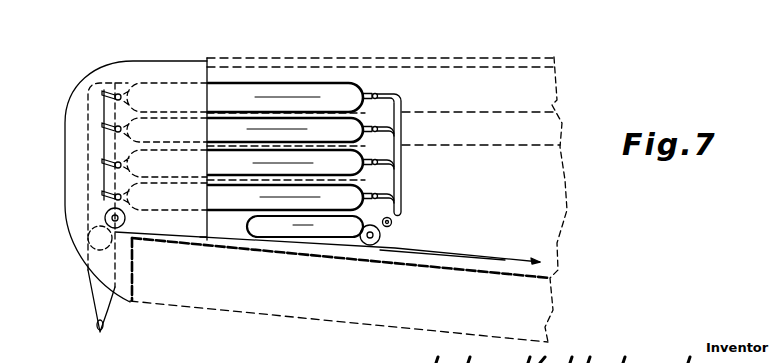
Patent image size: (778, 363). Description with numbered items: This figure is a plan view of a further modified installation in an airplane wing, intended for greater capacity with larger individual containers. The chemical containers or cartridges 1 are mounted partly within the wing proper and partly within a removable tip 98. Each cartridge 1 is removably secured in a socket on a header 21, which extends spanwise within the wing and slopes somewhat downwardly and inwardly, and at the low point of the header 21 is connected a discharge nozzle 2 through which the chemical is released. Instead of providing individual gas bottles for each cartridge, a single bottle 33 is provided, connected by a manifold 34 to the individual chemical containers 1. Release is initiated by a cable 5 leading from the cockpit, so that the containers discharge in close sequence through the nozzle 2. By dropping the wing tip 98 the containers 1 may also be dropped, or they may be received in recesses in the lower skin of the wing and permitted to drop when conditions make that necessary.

The cartridge 1 is at (255, 90).
The discharge nozzle 2 is at (100, 305).
The cable 5 is at (533, 257).
The header 21 is at (88, 170).
The bottle 33 is at (277, 226).
The manifold 34 is at (400, 182).
The removable tip 98 is at (70, 122).